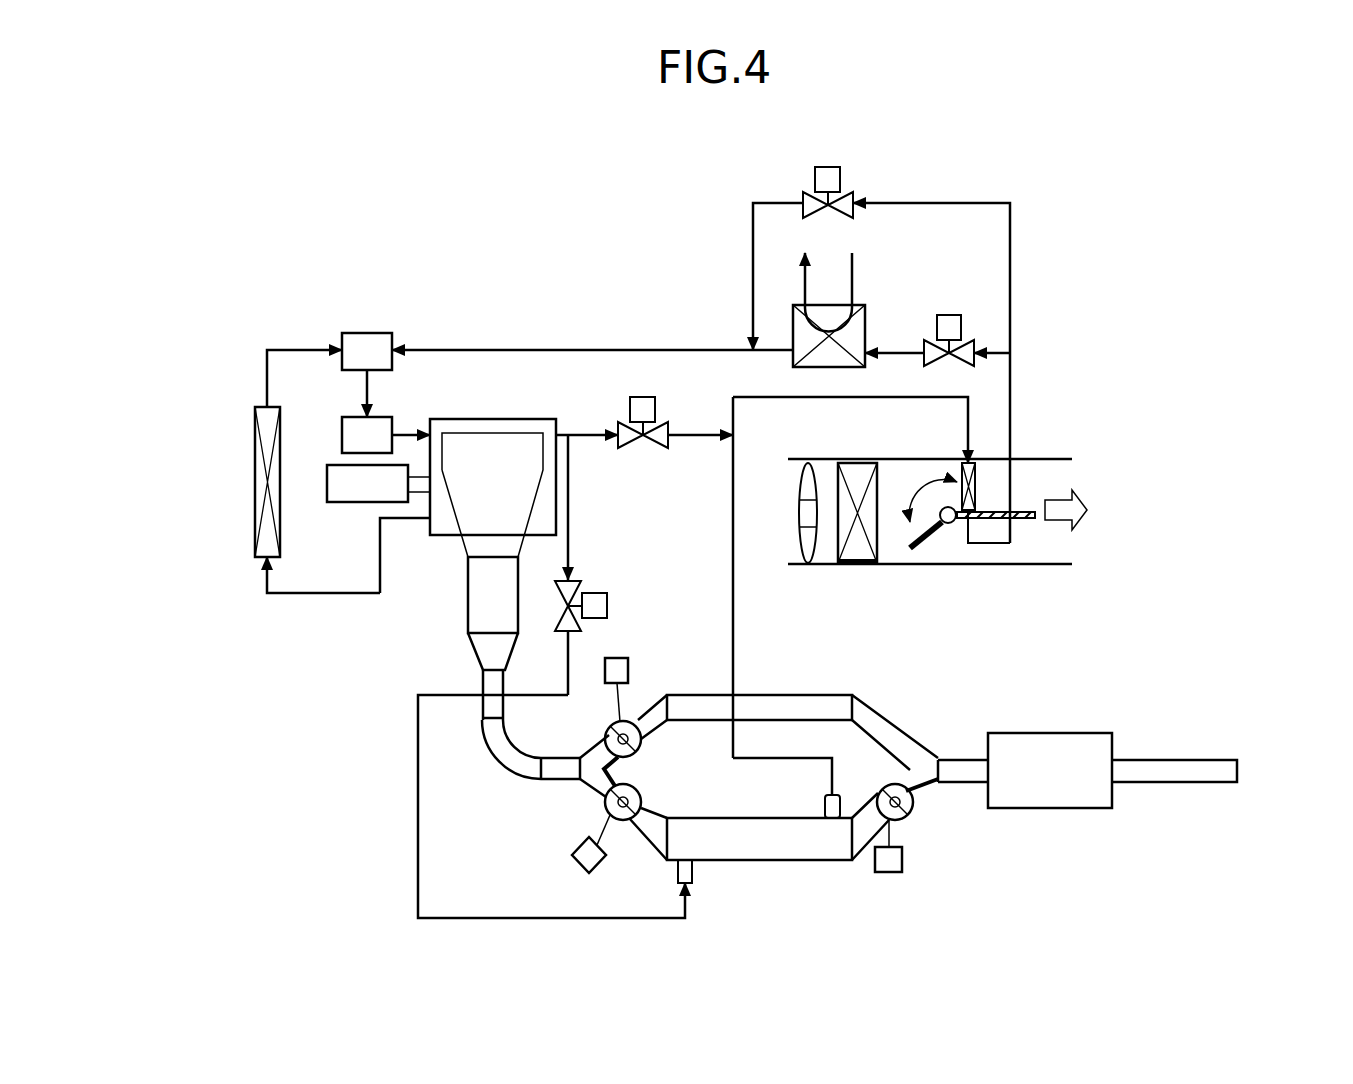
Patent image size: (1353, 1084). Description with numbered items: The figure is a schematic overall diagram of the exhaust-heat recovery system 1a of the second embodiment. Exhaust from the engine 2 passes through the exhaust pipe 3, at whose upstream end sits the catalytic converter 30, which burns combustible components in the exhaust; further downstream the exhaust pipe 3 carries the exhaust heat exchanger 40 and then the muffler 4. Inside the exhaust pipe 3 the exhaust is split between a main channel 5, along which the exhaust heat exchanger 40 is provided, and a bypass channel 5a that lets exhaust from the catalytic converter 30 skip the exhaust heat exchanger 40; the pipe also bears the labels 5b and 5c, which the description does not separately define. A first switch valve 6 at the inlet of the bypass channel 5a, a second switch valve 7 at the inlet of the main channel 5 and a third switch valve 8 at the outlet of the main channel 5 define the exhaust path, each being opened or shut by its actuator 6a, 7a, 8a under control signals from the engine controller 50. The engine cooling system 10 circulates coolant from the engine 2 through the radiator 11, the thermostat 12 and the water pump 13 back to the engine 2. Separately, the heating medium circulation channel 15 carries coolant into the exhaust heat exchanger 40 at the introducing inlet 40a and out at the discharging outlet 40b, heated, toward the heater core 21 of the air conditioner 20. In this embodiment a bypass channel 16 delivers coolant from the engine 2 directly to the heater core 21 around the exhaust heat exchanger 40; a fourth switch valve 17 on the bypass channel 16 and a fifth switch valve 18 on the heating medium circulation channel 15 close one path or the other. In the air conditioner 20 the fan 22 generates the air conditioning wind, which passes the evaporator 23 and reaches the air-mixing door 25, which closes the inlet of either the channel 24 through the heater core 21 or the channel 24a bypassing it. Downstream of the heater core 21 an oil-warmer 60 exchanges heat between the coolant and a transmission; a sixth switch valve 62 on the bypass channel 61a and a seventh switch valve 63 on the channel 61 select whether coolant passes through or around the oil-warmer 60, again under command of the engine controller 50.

The exhaust-heat recovery system 1a is at (383, 232).
The engine 2 is at (492, 453).
The exhaust pipe 3 is at (503, 757).
The muffler 4 is at (1050, 805).
The main channel 5 is at (759, 856).
The bypass channel 5a is at (770, 698).
The branch portion 5b is at (607, 770).
The junction portion 5c is at (927, 770).
The first switch valve 6 is at (620, 723).
The actuator 6a is at (628, 663).
The second switch valve 7 is at (607, 813).
The actuator 7a is at (572, 857).
The third switch valve 8 is at (913, 817).
The actuator 8a is at (902, 860).
The engine cooling system 10 is at (250, 373).
The radiator 11 is at (262, 488).
The thermostat 12 is at (365, 333).
The water pump 13 is at (355, 418).
The heating medium circulation channel 15 is at (413, 800).
The bypass channel 16 is at (675, 437).
The fourth switch valve 17 is at (628, 447).
The fifth switch valve 18 is at (580, 578).
The air conditioner 20 is at (1043, 457).
The heater core 21 is at (975, 480).
The fan 22 is at (800, 545).
The evaporator 23 is at (865, 563).
The channel 24 is at (1043, 480).
The channel 24a is at (1043, 543).
The air-mixing door 25 is at (930, 540).
The catalytic converter 30 is at (470, 608).
The exhaust heat exchanger 40 is at (772, 850).
The introducing inlet 40a is at (678, 875).
The discharging outlet 40b is at (830, 818).
The engine controller 50 is at (345, 503).
The oil-warmer 60 is at (868, 310).
The channel 61 is at (903, 350).
The bypass channel 61a is at (958, 203).
The sixth switch valve 62 is at (850, 190).
The seventh switch valve 63 is at (965, 340).